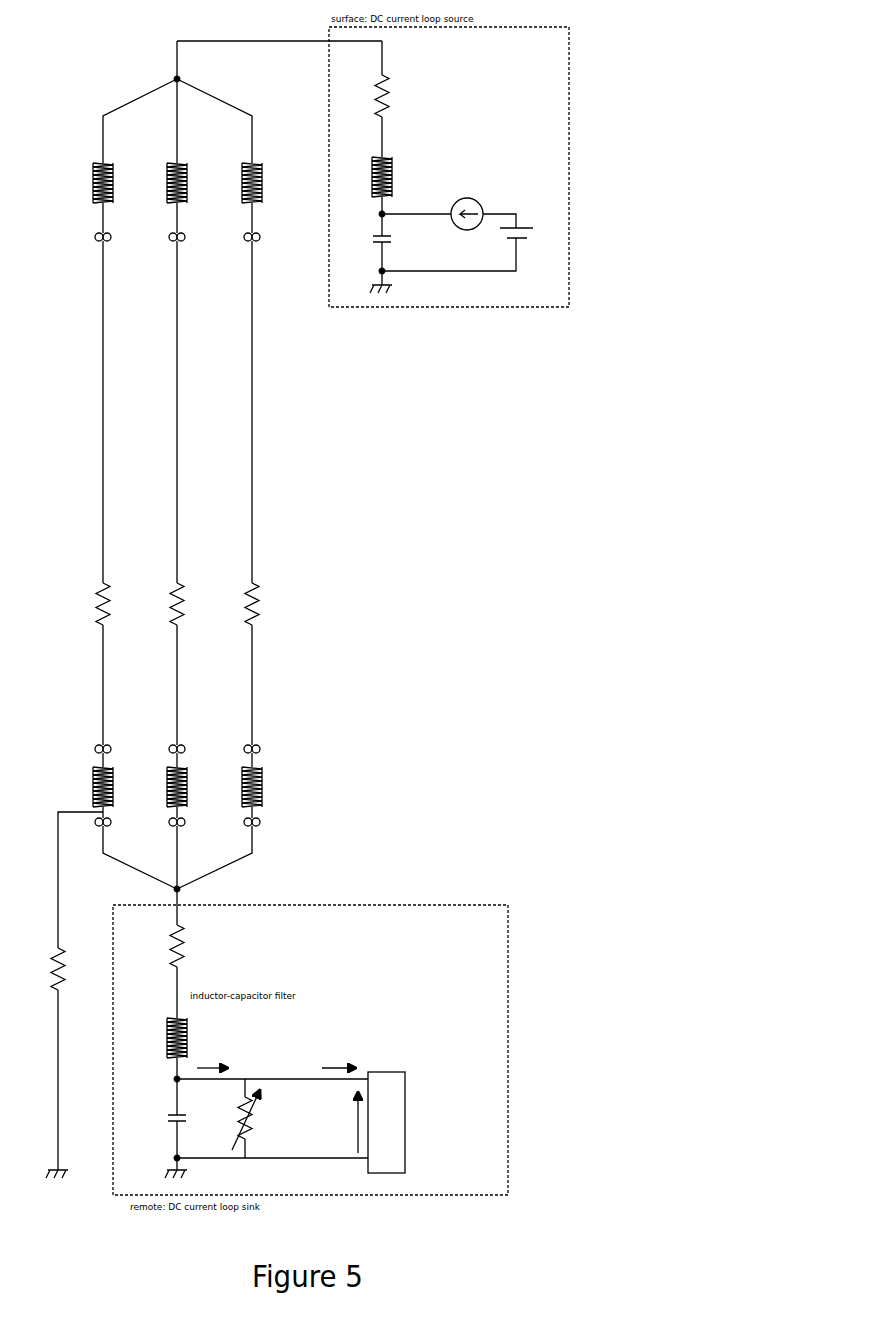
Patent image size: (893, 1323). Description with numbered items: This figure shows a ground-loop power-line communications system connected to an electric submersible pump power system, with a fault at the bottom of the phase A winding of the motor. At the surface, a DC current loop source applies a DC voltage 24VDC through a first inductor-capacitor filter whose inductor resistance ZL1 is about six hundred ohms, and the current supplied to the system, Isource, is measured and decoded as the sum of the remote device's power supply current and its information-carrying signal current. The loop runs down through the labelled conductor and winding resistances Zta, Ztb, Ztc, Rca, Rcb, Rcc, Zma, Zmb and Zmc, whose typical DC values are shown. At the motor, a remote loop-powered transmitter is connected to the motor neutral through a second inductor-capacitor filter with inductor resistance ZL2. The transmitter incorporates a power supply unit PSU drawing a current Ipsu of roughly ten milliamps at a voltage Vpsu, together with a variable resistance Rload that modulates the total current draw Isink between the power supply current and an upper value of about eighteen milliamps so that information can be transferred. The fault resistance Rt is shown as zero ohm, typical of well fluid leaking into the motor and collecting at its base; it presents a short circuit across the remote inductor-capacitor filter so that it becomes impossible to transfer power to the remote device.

The top cable impedance, conductor a Zta is at (127, 174).
The top cable impedance, conductor b Ztb is at (201, 174).
The top cable impedance, conductor c Ztc is at (276, 174).
The cable conductor resistance a Rca is at (125, 604).
The cable conductor resistance b Rcb is at (199, 604).
The cable conductor resistance c Rcc is at (274, 604).
The bottom cable impedance, conductor a Zma is at (124, 787).
The bottom cable impedance, conductor b Zmb is at (198, 787).
The bottom cable impedance, conductor c Zmc is at (273, 787).
The fault resistance Rt is at (79, 969).
The inductor resistance of first inductor-capacitor filter ZL1 is at (411, 96).
The inductor resistance of second inductor-capacitor filter ZL2 is at (204, 946).
The source current Isource is at (435, 207).
The DC supply voltage 24VDC is at (471, 240).
The total current draw Isink is at (212, 1059).
The power supply current Ipsu is at (354, 1059).
The power supply voltage Vpsu is at (343, 1122).
The power supply unit PSU is at (386, 1122).
The variable resistance Rload is at (246, 1118).